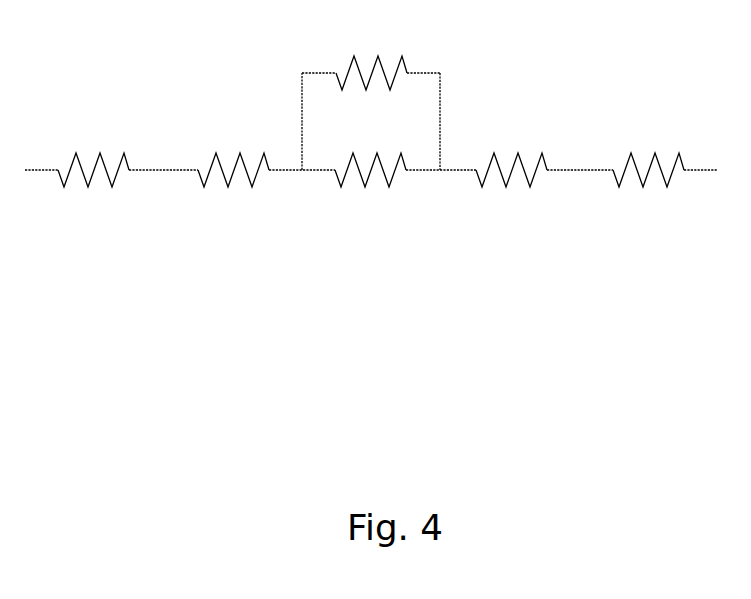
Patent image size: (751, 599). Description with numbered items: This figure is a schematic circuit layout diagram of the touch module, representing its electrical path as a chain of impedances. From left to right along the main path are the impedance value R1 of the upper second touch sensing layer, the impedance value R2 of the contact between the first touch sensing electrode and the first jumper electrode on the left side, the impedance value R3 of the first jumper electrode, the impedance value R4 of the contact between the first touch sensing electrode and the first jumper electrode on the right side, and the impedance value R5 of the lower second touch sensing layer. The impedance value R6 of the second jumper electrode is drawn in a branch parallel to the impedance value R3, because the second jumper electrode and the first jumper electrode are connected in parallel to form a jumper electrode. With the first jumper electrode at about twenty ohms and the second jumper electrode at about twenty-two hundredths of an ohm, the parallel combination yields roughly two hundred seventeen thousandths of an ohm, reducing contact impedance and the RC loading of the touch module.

The impedance value of upper second touch sensing layer R1 is at (93, 146).
The left-side contact impedance value R2 is at (233, 146).
The impedance value of first jumper electrode R3 is at (370, 146).
The right-side contact impedance value R4 is at (511, 146).
The impedance value of lower second touch sensing layer R5 is at (648, 146).
The impedance value of second jumper electrode R6 is at (371, 49).